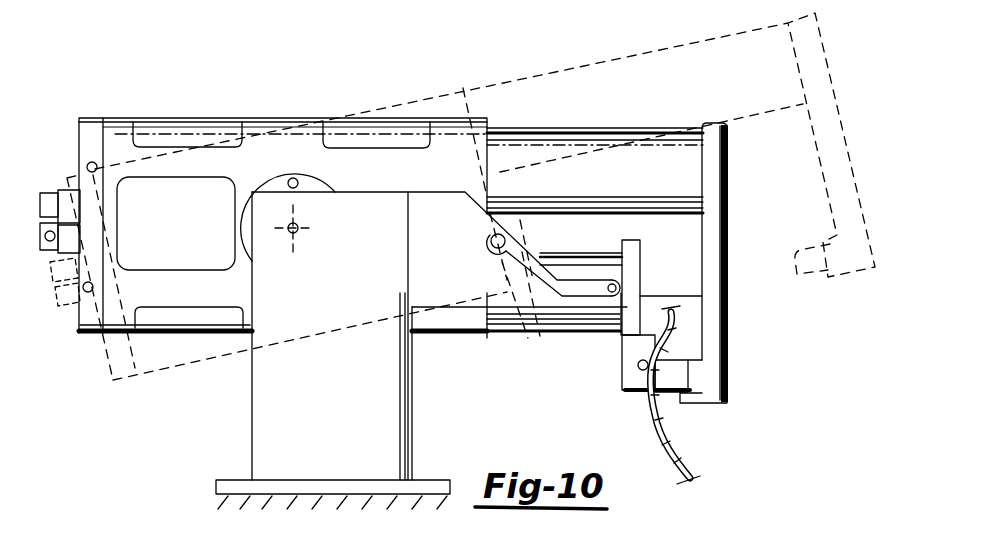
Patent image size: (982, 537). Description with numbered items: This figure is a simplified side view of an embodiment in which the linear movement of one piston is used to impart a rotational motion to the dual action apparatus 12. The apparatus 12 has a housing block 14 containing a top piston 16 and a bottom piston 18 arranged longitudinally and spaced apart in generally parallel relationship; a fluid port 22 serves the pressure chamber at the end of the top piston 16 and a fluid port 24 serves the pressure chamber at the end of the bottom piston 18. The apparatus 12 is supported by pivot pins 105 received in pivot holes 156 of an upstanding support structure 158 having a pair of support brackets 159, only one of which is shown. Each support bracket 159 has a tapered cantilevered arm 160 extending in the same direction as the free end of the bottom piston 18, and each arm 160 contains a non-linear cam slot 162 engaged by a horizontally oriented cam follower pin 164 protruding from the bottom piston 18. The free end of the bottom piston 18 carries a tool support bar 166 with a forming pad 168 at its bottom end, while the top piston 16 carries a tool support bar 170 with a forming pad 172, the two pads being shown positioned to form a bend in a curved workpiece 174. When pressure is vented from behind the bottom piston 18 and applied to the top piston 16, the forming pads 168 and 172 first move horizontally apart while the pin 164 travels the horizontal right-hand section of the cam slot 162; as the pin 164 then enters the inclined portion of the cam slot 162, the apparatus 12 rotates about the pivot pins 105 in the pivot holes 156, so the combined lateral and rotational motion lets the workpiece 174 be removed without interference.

The dual action apparatus 12 is at (318, 92).
The housing block 14 is at (212, 120).
The top piston 16 is at (626, 181).
The bottom piston 18 is at (580, 250).
The fluid port 22 is at (95, 162).
The fluid port 24 is at (95, 318).
The pivot pin 105 is at (291, 234).
The pivot hole 156 is at (300, 231).
The support structure 158 is at (410, 406).
The support bracket 159 is at (348, 191).
The cantilevered arm 160 is at (588, 312).
The cam slot 162 is at (490, 240).
The cam follower pin 164 is at (618, 287).
The tool support bar 166 is at (645, 295).
The forming pad 168 is at (632, 393).
The tool support bar 170 is at (728, 201).
The forming pad 172 is at (690, 375).
The workpiece 174 is at (671, 440).